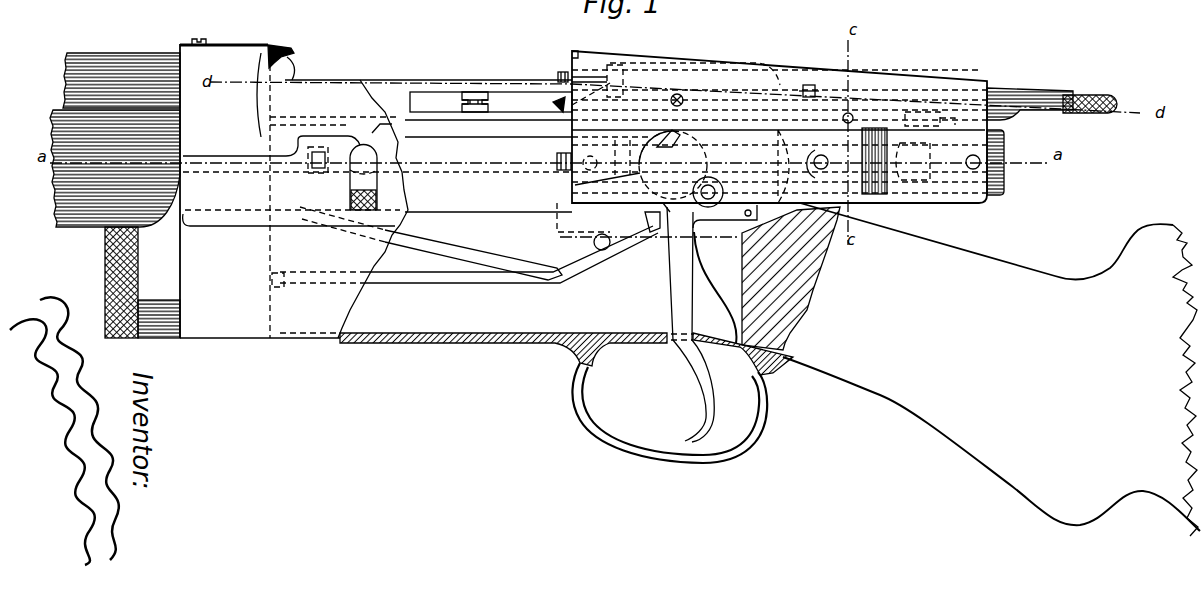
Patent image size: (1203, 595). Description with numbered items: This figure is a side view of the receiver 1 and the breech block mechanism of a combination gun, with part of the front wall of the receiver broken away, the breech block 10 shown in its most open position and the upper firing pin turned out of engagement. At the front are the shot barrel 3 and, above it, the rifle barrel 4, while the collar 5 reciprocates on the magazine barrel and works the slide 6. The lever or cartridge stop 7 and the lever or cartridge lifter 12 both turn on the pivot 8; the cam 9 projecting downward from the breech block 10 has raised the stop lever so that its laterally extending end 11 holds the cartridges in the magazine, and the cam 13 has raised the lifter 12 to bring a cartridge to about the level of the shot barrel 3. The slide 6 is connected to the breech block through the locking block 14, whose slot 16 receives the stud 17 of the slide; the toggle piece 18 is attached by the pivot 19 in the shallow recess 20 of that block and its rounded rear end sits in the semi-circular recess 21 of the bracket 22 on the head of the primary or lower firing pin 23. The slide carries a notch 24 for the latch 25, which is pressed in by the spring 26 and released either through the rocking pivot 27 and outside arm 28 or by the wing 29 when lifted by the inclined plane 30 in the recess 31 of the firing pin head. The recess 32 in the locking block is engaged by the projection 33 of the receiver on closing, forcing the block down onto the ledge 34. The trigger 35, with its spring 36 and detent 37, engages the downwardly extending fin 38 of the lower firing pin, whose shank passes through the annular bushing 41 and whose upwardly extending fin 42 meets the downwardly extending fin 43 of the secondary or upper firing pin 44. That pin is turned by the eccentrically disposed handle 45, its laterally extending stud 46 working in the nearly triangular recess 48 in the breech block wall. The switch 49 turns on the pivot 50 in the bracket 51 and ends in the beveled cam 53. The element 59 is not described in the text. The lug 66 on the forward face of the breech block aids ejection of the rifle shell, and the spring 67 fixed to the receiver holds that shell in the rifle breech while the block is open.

The receiver 1 is at (376, 188).
The shot barrel 3 is at (111, 168).
The rifle barrel 4 is at (111, 80).
The collar 5 is at (142, 292).
The slide 6 is at (488, 166).
The lever or cartridge stop 7 is at (436, 279).
The pivot 8 is at (602, 242).
The cam 9 is at (655, 232).
The breech block 10 is at (967, 203).
The laterally extending end 11 is at (284, 286).
The lever or cartridge lifter 12 is at (474, 246).
The cam 13 is at (662, 215).
The locking block 14 is at (907, 168).
The slot 16 is at (692, 218).
The stud 17 is at (708, 196).
The toggle piece 18 is at (853, 206).
The pivot 19 is at (833, 208).
The shallow recess 20 is at (833, 150).
The semi-circular recess 21 is at (902, 185).
The bracket 22 is at (922, 168).
The primary or lower firing pin 23 is at (1009, 162).
The notch 24 is at (576, 186).
The latch 25 is at (326, 170).
The spring 26 is at (320, 146).
The rocking pivot 27 is at (362, 158).
The arm 28 is at (358, 211).
The wing 29 is at (594, 214).
The inclined plane 30 is at (628, 207).
The recess 31 is at (627, 157).
The recess 32 is at (673, 137).
The projection 33 is at (375, 128).
The ledge 34 is at (648, 220).
The trigger 35 is at (672, 245).
The spring 36 is at (715, 287).
The detent 37 is at (667, 203).
The downwardly extending fin 38 is at (927, 203).
The annular bushing 41 is at (902, 125).
The upwardly extending fin 42 is at (940, 128).
The downwardly extending fin 43 is at (938, 118).
The secondary or upper firing pin 44 is at (1020, 101).
The eccentrically disposed handle 45 is at (1096, 97).
The laterally extending stud 46 is at (874, 140).
The recess 48 is at (850, 114).
The switch 49 is at (491, 102).
The pivot 50 is at (486, 92).
The bracket 51 is at (466, 92).
The cam 53 is at (560, 104).
The pin 59 is at (557, 160).
The lug 66 is at (562, 72).
The spring 67 is at (272, 46).